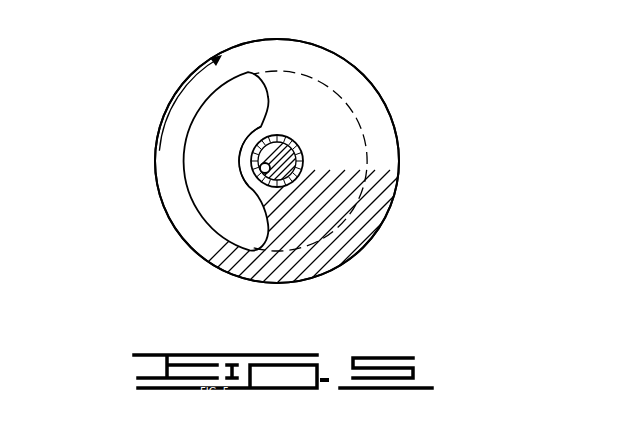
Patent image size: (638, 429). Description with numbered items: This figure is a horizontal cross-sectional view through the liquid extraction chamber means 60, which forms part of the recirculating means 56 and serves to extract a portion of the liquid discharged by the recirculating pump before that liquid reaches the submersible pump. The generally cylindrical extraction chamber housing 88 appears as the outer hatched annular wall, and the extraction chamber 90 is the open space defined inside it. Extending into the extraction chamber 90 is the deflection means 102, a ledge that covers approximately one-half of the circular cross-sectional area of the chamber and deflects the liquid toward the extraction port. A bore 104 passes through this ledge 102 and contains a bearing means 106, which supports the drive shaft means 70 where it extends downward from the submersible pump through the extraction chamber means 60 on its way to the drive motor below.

The recirculating means 56 is at (366, 68).
The liquid extraction chamber means 60 is at (311, 161).
The extraction chamber housing 88 is at (180, 125).
The extraction chamber 90 is at (222, 151).
The bore 104 is at (248, 192).
The drive shaft means 70 is at (256, 143).
The bearing means 106 is at (302, 150).
The deflection means 102 is at (308, 205).